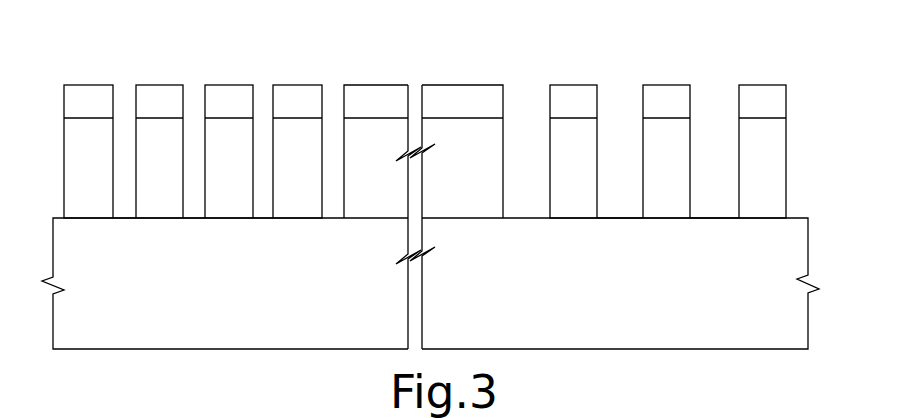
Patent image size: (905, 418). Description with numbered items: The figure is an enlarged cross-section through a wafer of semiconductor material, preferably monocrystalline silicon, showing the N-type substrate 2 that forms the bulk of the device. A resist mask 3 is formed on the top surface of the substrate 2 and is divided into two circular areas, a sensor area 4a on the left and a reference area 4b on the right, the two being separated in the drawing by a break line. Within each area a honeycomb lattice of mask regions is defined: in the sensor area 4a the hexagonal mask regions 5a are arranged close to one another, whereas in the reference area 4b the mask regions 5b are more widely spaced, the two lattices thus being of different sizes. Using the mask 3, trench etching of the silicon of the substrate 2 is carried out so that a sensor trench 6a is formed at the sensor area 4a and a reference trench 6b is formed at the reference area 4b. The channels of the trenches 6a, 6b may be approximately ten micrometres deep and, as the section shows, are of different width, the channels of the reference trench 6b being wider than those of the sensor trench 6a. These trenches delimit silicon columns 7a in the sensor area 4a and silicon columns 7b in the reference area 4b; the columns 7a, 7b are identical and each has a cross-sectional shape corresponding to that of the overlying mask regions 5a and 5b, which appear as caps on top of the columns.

The N-type substrate 2 is at (782, 341).
The resist mask 3 is at (806, 100).
The sensor area 4a is at (242, 174).
The reference area 4b is at (598, 180).
The mask regions of the sensor area 5a is at (297, 97).
The mask regions of the reference area 5b is at (753, 100).
The sensor trench 6a is at (121, 196).
The reference trench 6b is at (722, 200).
The silicon columns of the sensor area 7a is at (175, 171).
The silicon columns of the reference area 7b is at (590, 172).